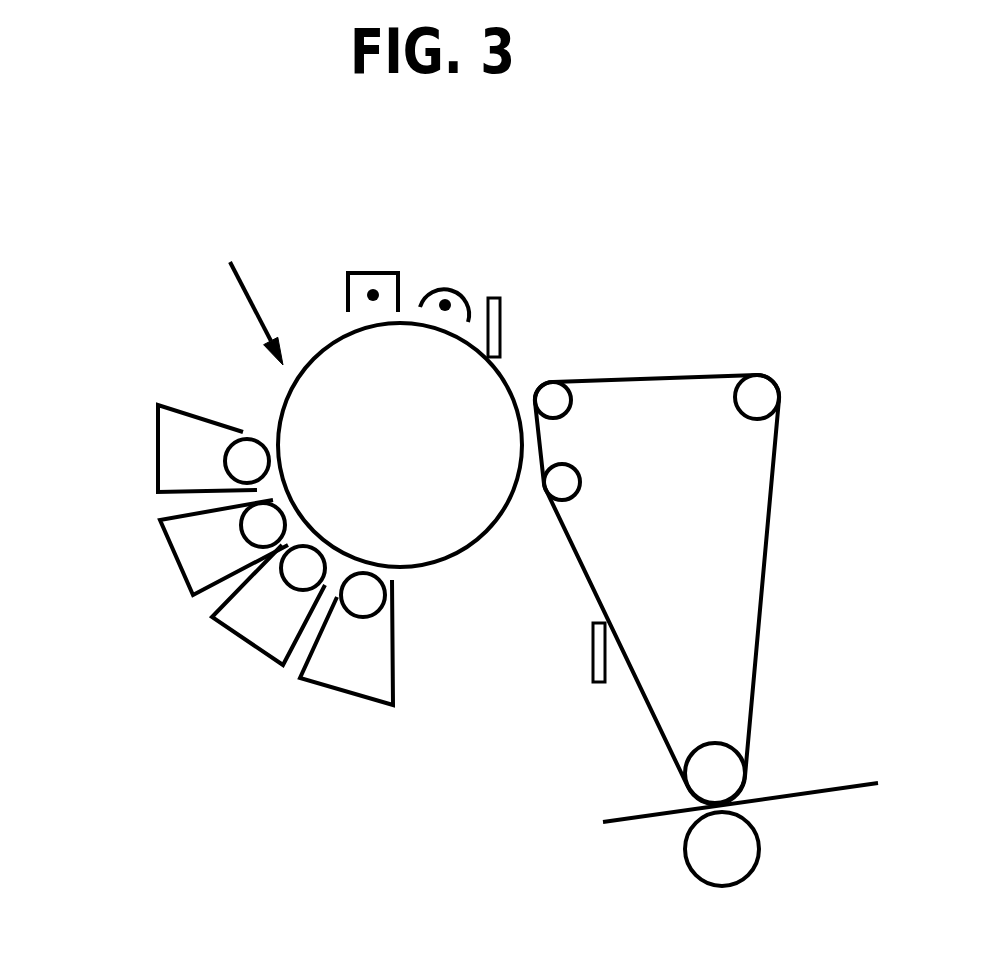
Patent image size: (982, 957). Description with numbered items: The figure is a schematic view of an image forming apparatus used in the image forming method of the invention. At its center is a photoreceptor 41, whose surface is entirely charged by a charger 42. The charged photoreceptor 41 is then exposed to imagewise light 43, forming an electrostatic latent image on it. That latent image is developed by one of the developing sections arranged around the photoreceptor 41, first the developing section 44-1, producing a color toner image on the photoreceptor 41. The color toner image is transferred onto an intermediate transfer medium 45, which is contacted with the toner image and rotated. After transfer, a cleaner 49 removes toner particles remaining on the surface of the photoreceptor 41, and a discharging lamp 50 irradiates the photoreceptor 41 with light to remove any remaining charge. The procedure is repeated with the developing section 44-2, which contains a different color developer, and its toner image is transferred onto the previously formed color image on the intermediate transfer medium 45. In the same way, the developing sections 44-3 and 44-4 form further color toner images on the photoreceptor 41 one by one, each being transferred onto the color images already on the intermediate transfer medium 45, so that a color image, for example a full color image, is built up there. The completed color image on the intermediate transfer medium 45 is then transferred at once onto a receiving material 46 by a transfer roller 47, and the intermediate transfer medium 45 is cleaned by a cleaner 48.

The photoreceptor 41 is at (468, 543).
The charger 42 is at (368, 272).
The imagewise light 43 is at (242, 292).
The developing section 44-1 is at (155, 432).
The developing section 44-2 is at (167, 547).
The developing section 44-3 is at (247, 645).
The developing section 44-4 is at (350, 695).
The intermediate transfer medium 45 is at (705, 372).
The receiving material 46 is at (800, 797).
The transfer roller 47 is at (687, 862).
The cleaner 48 is at (600, 683).
The cleaner 49 is at (502, 317).
The discharging lamp 50 is at (457, 287).